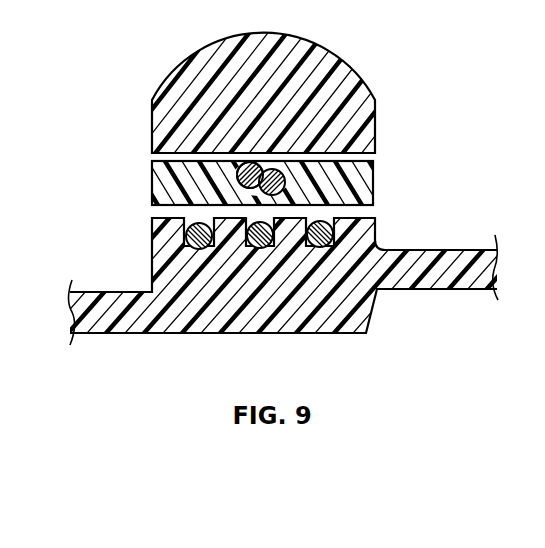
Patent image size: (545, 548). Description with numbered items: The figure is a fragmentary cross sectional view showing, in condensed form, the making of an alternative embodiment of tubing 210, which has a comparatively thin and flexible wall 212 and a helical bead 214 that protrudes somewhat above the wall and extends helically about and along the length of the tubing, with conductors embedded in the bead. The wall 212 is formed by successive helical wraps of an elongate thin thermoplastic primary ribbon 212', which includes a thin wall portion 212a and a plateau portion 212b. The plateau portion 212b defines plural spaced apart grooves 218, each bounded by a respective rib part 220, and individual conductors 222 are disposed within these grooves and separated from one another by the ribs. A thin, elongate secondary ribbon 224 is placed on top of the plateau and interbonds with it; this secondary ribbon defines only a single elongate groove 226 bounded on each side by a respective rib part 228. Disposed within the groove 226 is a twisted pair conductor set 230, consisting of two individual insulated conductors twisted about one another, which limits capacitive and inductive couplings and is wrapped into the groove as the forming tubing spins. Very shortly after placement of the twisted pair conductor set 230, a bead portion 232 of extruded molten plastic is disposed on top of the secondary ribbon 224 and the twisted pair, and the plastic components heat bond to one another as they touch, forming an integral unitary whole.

The tubing 210 is at (422, 105).
The wall 212 is at (272, 289).
The thin wall portion 212a is at (463, 260).
The plateau portion 212b is at (152, 246).
The primary ribbon 212' is at (286, 314).
The helical bead 214 is at (150, 90).
The grooves 218 is at (362, 160).
The rib part 220 is at (153, 221).
The conductors 222 is at (193, 244).
The secondary ribbon 224 is at (365, 188).
The groove 226 is at (278, 167).
The rib part 228 is at (240, 150).
The twisted pair conductor set 230 is at (240, 146).
The bead portion 232 is at (353, 88).